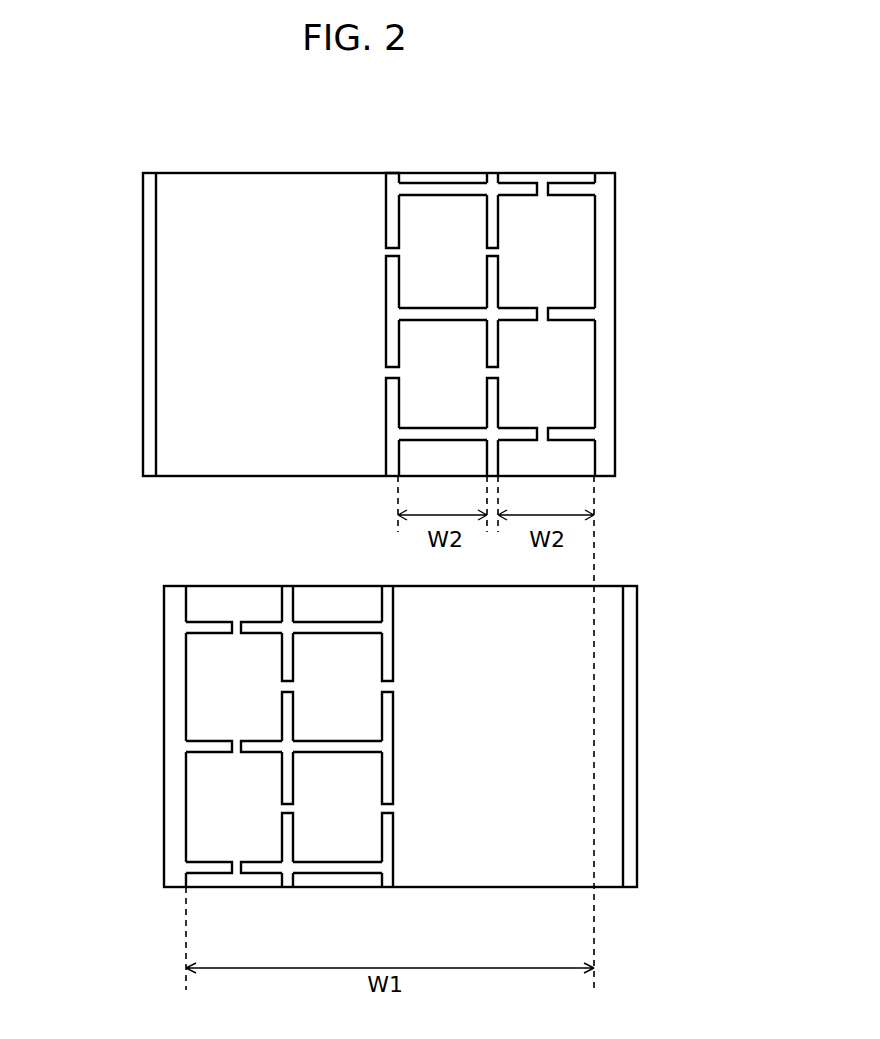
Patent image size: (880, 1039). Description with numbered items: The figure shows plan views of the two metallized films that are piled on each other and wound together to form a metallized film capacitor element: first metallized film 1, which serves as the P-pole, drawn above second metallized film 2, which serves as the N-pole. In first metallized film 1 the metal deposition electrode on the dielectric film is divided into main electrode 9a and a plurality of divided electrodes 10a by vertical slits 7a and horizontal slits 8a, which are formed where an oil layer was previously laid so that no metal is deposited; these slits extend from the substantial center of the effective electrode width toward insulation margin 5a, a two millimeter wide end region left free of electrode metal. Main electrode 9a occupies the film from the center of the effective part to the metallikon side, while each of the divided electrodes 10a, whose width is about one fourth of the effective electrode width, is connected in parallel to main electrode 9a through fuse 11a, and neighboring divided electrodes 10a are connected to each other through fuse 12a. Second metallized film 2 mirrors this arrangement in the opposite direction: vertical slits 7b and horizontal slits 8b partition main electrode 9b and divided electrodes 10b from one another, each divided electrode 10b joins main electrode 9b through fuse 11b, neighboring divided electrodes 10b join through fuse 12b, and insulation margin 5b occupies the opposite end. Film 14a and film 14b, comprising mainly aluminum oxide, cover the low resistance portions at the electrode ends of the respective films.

The first metallized film 1 is at (620, 122).
The second metallized film 2 is at (660, 585).
The insulation margin 5a is at (605, 312).
The insulation margin 5b is at (172, 748).
The vertical slits 7a is at (488, 255).
The vertical slits 7b is at (283, 793).
The horizontal slits 8a is at (450, 433).
The horizontal slits 8b is at (325, 625).
The main electrode 9a is at (194, 261).
The main electrode 9b is at (580, 792).
The divided electrodes 10a is at (468, 290).
The divided electrodes 10b is at (302, 768).
The fuse 11a is at (392, 372).
The fuse 11b is at (385, 687).
The fuse 12a is at (497, 245).
The fuse 12b is at (288, 810).
The first film 14a is at (150, 297).
The first film 14b is at (632, 672).